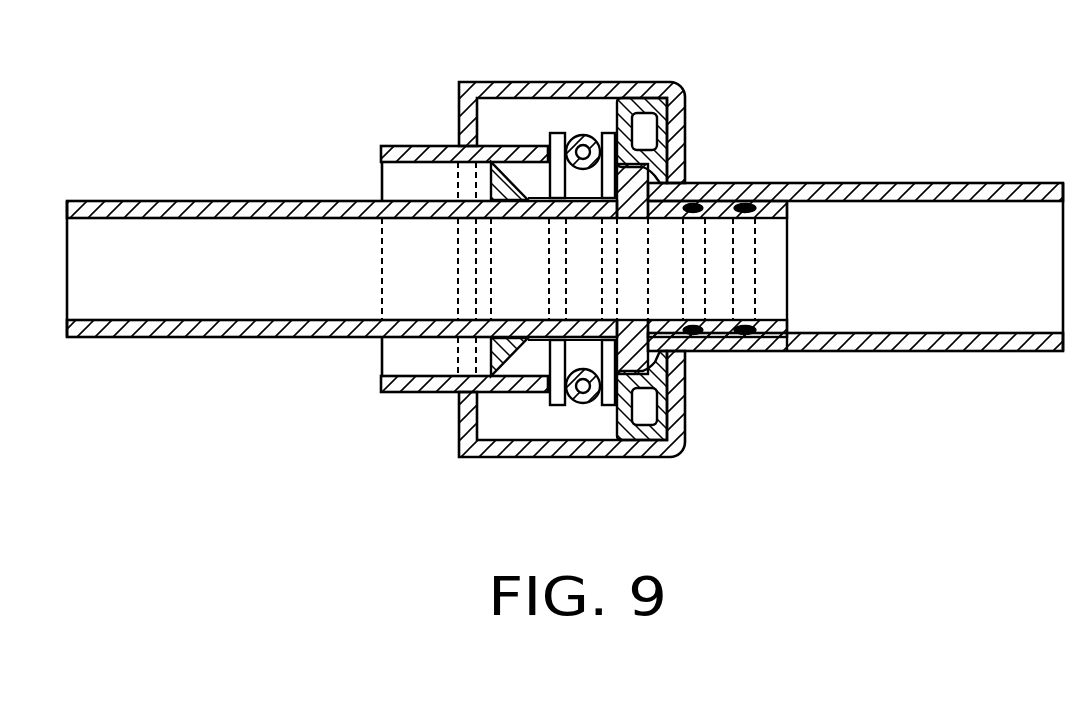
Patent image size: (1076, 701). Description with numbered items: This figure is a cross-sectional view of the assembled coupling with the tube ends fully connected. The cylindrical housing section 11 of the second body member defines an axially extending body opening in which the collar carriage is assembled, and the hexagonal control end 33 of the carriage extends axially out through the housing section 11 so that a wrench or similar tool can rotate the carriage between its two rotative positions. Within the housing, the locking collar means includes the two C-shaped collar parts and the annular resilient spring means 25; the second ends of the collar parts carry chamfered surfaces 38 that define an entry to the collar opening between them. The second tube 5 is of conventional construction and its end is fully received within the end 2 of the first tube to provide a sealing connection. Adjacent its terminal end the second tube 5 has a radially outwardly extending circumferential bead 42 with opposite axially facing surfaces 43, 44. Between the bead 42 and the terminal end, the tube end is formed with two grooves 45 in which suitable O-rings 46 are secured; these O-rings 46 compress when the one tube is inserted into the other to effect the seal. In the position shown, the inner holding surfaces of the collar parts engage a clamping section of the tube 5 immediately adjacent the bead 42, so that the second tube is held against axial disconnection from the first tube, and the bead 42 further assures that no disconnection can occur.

The end of the first tube 2 is at (912, 183).
The second tube 5 is at (200, 201).
The cylindrical housing section 11 is at (540, 82).
The annular resilient spring means 25 is at (590, 402).
The control end 33 is at (392, 392).
The chamfered surfaces 38 is at (497, 350).
The circumferential bead 42 is at (638, 177).
The axially facing surface of the bead 43 is at (647, 358).
The axially facing surface of the bead 44 is at (612, 352).
The grooves 45 is at (787, 351).
The O-rings 46 is at (748, 347).